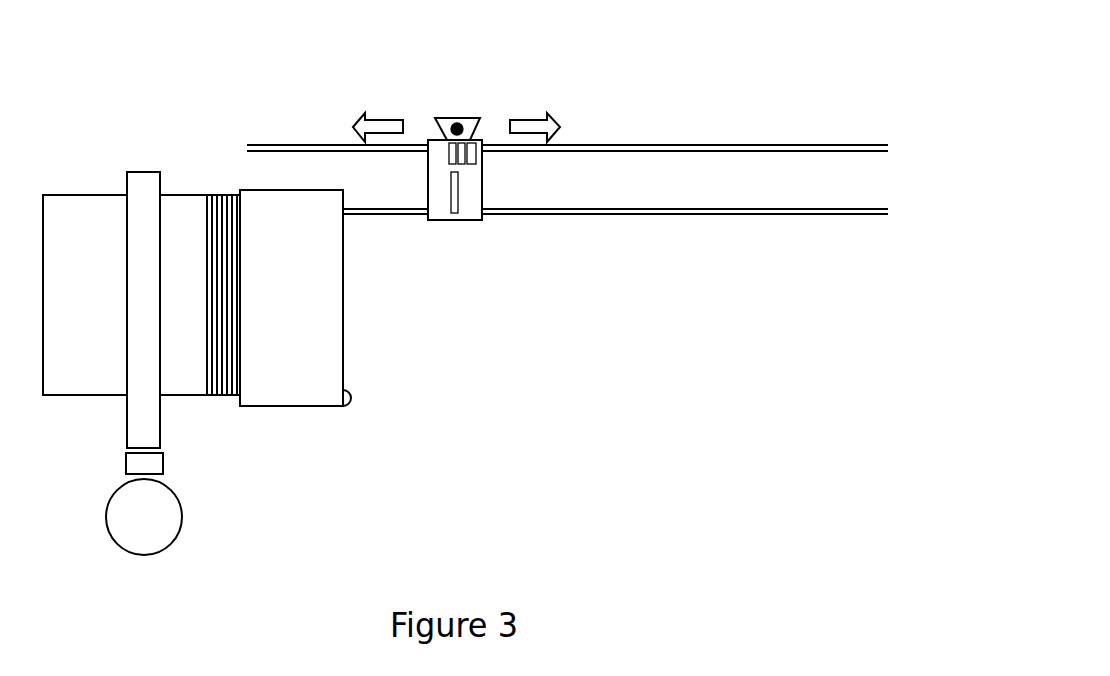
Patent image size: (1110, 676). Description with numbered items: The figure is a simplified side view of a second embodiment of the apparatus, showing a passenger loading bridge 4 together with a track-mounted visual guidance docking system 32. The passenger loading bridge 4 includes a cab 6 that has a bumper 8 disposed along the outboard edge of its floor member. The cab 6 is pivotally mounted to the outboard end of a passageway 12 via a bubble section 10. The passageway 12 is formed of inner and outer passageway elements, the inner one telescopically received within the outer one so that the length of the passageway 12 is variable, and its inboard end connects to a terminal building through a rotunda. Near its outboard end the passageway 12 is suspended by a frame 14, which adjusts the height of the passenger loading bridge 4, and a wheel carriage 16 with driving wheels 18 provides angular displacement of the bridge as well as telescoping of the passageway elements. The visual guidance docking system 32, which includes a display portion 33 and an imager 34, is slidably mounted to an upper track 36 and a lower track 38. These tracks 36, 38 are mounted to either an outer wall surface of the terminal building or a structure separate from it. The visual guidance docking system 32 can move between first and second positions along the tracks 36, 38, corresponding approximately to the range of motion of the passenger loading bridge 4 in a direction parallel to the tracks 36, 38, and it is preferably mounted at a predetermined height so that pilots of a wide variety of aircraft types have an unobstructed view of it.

The passenger loading bridge 4 is at (68, 158).
The cab 6 is at (291, 357).
The bumper 8 is at (371, 451).
The bubble section 10 is at (245, 353).
The passageway 12 is at (141, 361).
The frame 14 is at (130, 235).
The wheel carriage 16 is at (197, 507).
The driving wheels 18 is at (161, 570).
The visual guidance docking system 32 is at (456, 172).
The display portion 33 is at (491, 238).
The imager 34 is at (488, 73).
The upper track 36 is at (567, 100).
The lower track 38 is at (615, 269).